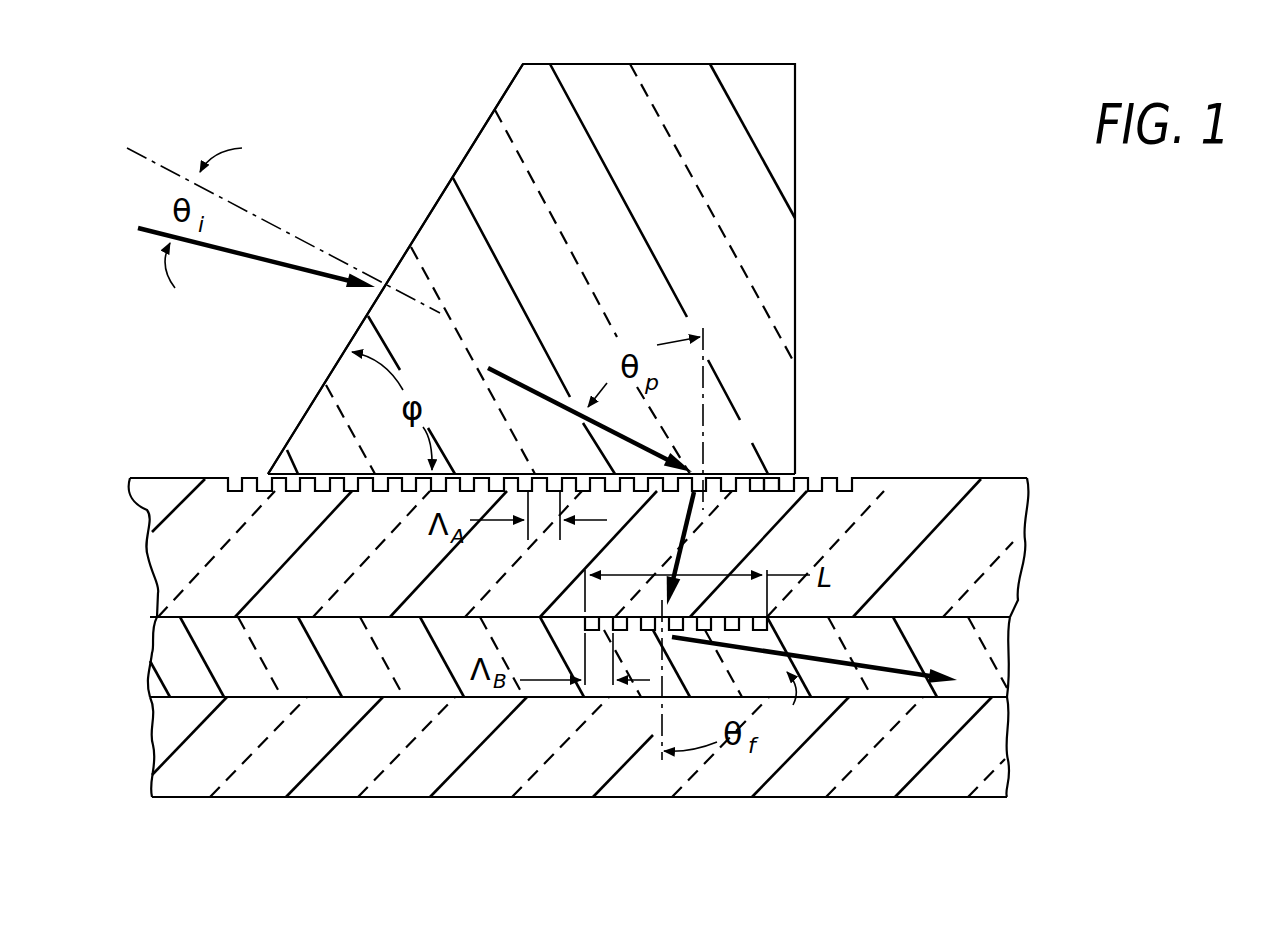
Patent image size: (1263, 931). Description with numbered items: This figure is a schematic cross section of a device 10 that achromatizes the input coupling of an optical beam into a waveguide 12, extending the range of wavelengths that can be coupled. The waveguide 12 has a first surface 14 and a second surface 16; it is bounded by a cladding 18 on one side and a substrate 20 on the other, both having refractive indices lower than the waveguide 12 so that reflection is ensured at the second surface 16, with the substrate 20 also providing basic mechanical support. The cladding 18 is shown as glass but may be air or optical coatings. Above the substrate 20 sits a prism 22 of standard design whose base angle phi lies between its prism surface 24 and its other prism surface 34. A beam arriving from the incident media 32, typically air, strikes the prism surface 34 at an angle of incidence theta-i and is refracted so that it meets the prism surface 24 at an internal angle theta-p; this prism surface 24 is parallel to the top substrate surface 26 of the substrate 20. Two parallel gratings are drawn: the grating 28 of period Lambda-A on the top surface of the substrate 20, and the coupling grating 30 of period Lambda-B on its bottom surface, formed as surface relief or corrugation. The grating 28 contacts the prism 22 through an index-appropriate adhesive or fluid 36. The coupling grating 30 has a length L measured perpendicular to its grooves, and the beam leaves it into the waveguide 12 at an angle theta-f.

The device 10 is at (576, 804).
The waveguide 12 is at (170, 655).
The first surface 14 is at (990, 613).
The second surface 16 is at (990, 700).
The cladding 18 is at (172, 735).
The substrate 20 is at (170, 562).
The prism 22 is at (778, 153).
The prism surface 24 is at (723, 473).
The top substrate surface 26 is at (952, 478).
The grating 28 is at (833, 478).
The coupling grating 30 is at (688, 613).
The incident media 32 is at (380, 142).
The prism surface 34 is at (331, 379).
The adhesive or fluid 36 is at (767, 477).